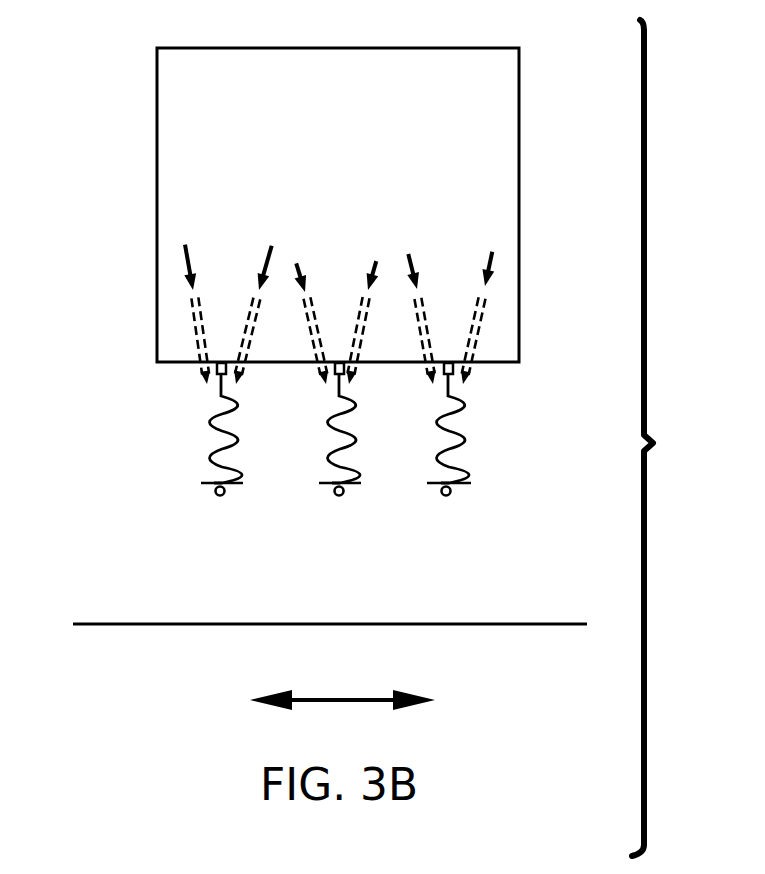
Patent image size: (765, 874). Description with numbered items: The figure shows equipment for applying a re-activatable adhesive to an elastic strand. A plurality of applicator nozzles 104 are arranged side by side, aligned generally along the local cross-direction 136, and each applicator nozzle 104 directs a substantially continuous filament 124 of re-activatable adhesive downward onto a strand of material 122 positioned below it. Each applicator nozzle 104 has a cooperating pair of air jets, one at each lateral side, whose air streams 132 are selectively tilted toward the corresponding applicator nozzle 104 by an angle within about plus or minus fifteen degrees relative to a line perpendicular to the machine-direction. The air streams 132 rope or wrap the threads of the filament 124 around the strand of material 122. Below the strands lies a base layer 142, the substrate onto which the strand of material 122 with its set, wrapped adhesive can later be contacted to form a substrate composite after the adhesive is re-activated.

The air stream 132 is at (205, 373).
The applicator nozzle 104 is at (222, 392).
The filament 124 is at (210, 433).
The strand of material 122 is at (220, 496).
The base layer 142 is at (486, 623).
The cross-direction 136 is at (353, 698).